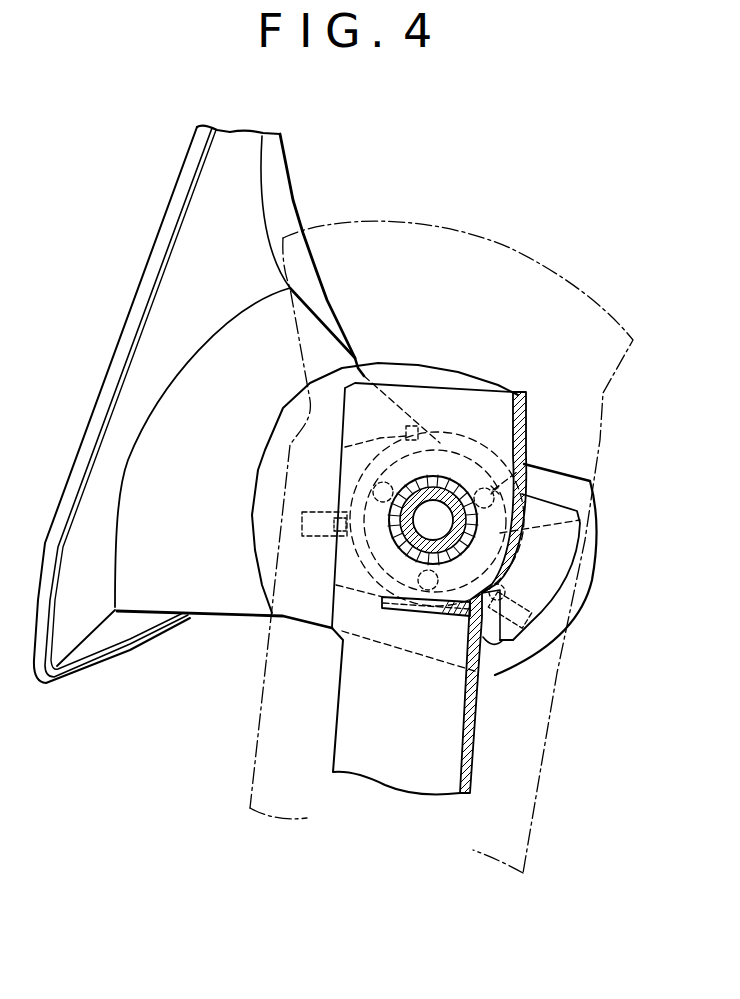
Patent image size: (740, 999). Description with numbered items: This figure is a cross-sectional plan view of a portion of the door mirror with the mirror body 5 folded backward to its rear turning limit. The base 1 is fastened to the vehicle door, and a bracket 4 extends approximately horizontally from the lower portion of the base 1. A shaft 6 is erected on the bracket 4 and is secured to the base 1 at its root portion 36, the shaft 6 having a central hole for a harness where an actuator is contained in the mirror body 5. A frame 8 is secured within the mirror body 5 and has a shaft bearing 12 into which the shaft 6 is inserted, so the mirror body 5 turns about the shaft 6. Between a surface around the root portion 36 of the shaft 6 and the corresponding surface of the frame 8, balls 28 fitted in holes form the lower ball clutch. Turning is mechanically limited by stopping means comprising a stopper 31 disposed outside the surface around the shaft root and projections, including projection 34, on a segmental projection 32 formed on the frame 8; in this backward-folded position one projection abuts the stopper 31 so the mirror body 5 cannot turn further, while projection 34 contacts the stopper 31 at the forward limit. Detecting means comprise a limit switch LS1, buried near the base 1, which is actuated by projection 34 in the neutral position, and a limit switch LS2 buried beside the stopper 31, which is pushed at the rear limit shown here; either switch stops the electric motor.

The base 1 is at (158, 312).
The bracket 4 is at (307, 608).
The mirror body 5 is at (560, 277).
The shaft 6 is at (445, 515).
The frame 8 is at (526, 405).
The shaft bearing 12 is at (408, 532).
The balls 28 is at (548, 470).
The stopper 31 is at (500, 652).
The segmental projection 32 is at (472, 433).
The projection 34 is at (407, 426).
The root portion 36 is at (593, 512).
The limit switch LS1 is at (302, 524).
The limit switch LS2 is at (538, 621).